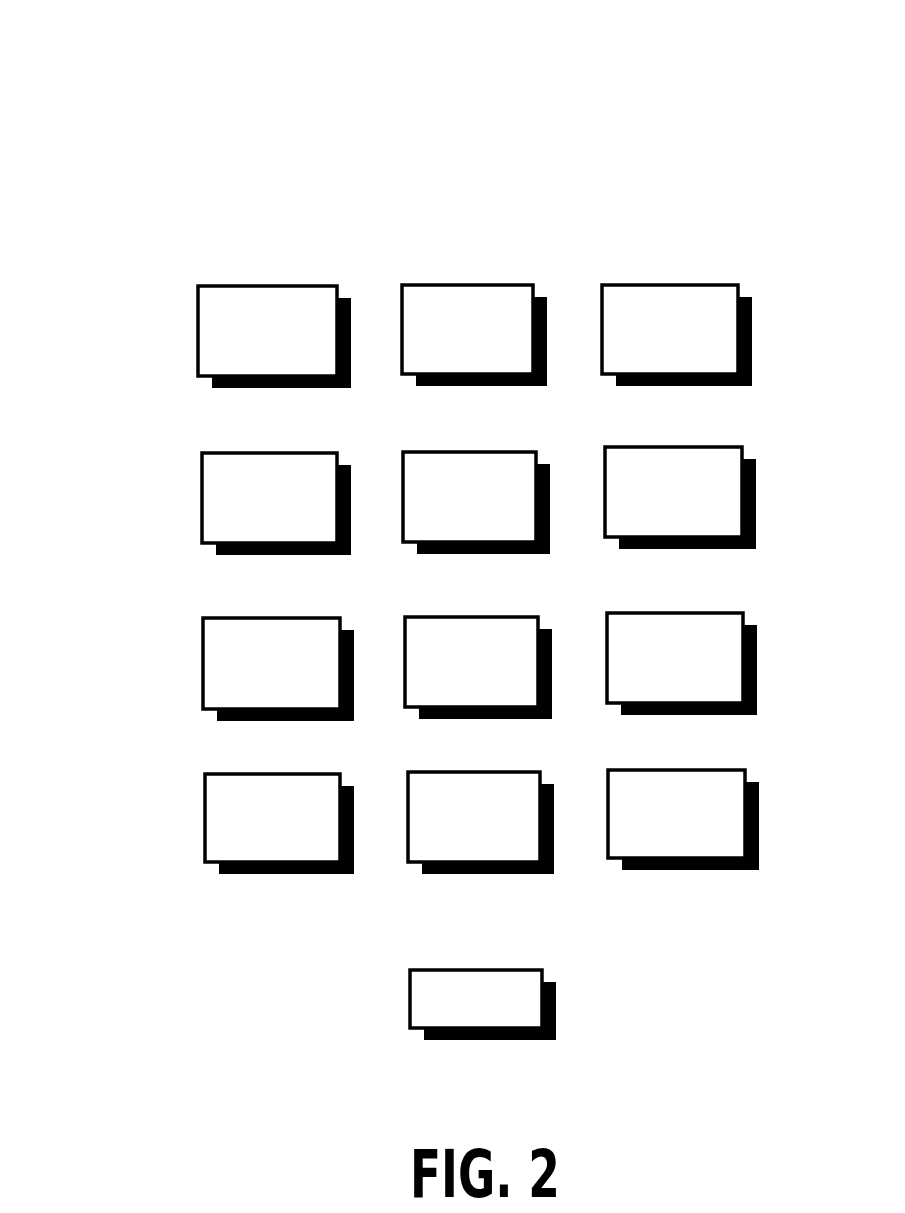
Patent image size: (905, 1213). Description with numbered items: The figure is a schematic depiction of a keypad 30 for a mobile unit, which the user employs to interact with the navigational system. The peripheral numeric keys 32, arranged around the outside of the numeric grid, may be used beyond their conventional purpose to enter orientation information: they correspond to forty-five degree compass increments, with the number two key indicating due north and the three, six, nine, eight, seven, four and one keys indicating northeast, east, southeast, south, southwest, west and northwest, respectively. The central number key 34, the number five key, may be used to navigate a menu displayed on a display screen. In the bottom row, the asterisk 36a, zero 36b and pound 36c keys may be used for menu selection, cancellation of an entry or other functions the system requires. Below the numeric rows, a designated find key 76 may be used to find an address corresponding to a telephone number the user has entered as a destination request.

The keypad 30 is at (710, 109).
The peripheral numeric keys 32 is at (198, 325).
The central number key 34 is at (453, 449).
The asterisk key 36a is at (245, 864).
The zero key 36b is at (445, 863).
The pound key 36c is at (649, 862).
The find key 76 is at (424, 1031).